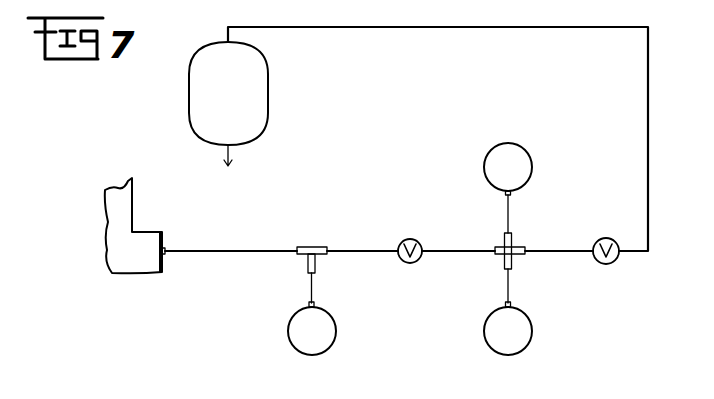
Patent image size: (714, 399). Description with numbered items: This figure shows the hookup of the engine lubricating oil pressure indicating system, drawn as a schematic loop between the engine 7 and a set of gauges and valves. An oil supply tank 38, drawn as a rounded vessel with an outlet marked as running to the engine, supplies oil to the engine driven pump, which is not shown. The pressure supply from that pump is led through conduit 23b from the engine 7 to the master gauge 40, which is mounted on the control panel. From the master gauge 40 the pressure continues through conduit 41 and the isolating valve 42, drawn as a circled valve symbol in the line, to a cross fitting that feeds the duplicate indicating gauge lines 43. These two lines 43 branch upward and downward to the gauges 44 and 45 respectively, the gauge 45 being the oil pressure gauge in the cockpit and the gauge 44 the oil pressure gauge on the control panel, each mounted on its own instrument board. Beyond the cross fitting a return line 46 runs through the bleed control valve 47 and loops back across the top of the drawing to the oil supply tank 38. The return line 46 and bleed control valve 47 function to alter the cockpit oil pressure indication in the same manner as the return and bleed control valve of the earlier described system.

The engine 7 is at (133, 198).
The oil supply tank 38 is at (207, 123).
The conduit 23b is at (245, 254).
The master gauge 40 is at (330, 327).
The conduit 41 is at (357, 253).
The isolating valve 42 is at (413, 258).
The duplicate indicating gauge lines 43 is at (507, 208).
The gauge 44 is at (486, 331).
The gauge 45 is at (520, 160).
The return line 46 is at (560, 253).
The bleed control valve 47 is at (614, 256).